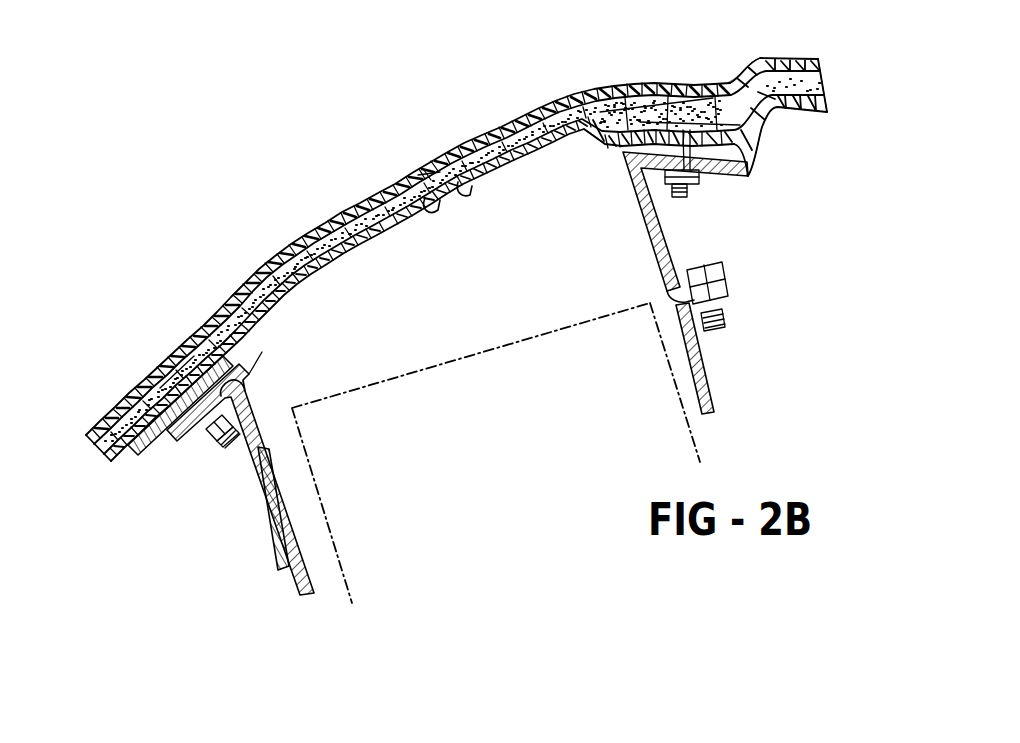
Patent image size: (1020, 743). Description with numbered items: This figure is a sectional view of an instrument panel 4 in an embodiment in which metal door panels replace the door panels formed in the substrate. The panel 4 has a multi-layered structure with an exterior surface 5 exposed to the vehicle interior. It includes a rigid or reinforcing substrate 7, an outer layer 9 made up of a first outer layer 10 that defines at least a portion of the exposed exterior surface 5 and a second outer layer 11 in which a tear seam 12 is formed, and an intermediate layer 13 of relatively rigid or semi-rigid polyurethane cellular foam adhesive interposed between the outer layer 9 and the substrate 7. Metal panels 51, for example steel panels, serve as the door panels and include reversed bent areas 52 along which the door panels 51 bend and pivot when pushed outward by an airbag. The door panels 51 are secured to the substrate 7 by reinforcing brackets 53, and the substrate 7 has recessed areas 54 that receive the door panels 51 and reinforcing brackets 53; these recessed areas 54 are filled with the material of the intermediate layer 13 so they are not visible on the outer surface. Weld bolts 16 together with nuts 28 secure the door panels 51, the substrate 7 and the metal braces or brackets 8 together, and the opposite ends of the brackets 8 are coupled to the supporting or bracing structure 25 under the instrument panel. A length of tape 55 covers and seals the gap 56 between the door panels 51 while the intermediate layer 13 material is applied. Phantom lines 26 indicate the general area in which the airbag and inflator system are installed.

The panel 4 is at (718, 68).
The exterior surface 5 is at (262, 266).
The substrate 7 is at (124, 468).
The metal braces or brackets 8 is at (653, 283).
The outer layer 9 is at (847, 55).
The first outer layer 10 is at (88, 436).
The second outer layer 11 is at (95, 443).
The tear seam 12 is at (427, 160).
The intermediate layer 13 is at (113, 452).
The weld bolts 16 is at (697, 100).
The supporting or bracing structure 25 is at (700, 353).
The phantom lines 26 is at (343, 553).
The nuts 28 is at (197, 449).
The metal panels 51 is at (393, 236).
The reversed bent areas 52 is at (262, 349).
The reinforcing brackets 53 is at (476, 255).
The recessed areas 54 is at (446, 258).
The tape 55 is at (440, 203).
The gap 56 is at (463, 210).